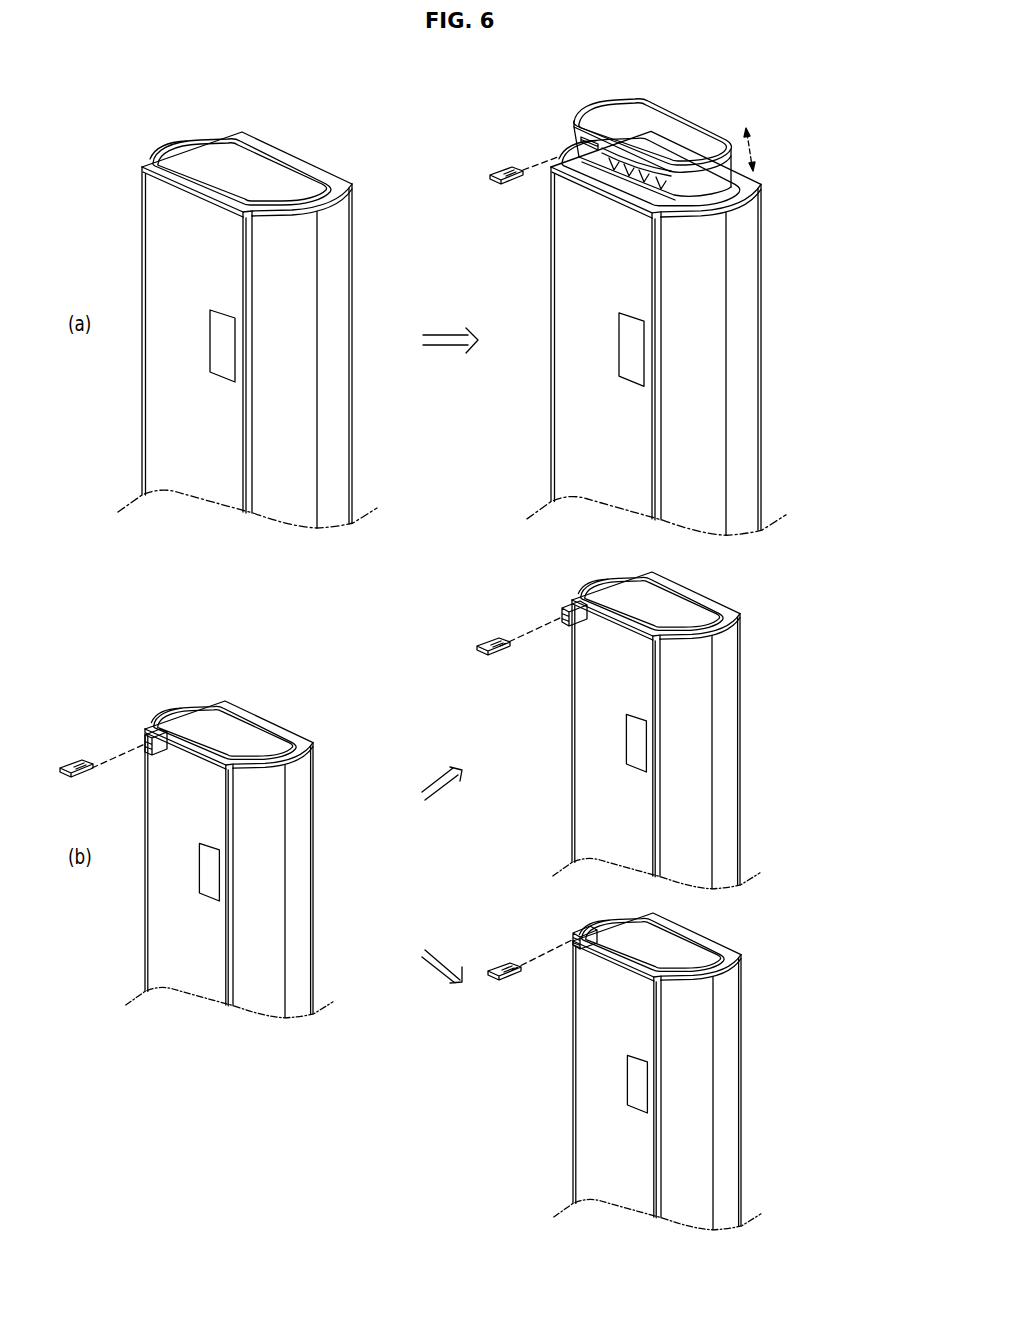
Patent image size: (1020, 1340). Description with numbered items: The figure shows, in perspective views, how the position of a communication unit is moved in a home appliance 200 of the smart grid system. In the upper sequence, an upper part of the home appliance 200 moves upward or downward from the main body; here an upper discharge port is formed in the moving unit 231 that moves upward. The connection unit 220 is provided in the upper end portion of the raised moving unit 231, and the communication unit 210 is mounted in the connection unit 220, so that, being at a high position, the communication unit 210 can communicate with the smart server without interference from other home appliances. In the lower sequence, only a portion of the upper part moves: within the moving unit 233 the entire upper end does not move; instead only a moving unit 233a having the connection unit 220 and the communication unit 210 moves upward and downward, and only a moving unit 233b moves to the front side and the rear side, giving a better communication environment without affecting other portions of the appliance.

The home appliance 200 is at (363, 275).
The connection unit 220 is at (643, 132).
The communication unit 210 is at (584, 118).
The moving unit 231 is at (705, 132).
The moving unit 233 is at (145, 738).
The moving unit 233a is at (577, 603).
The moving unit 233b is at (575, 932).